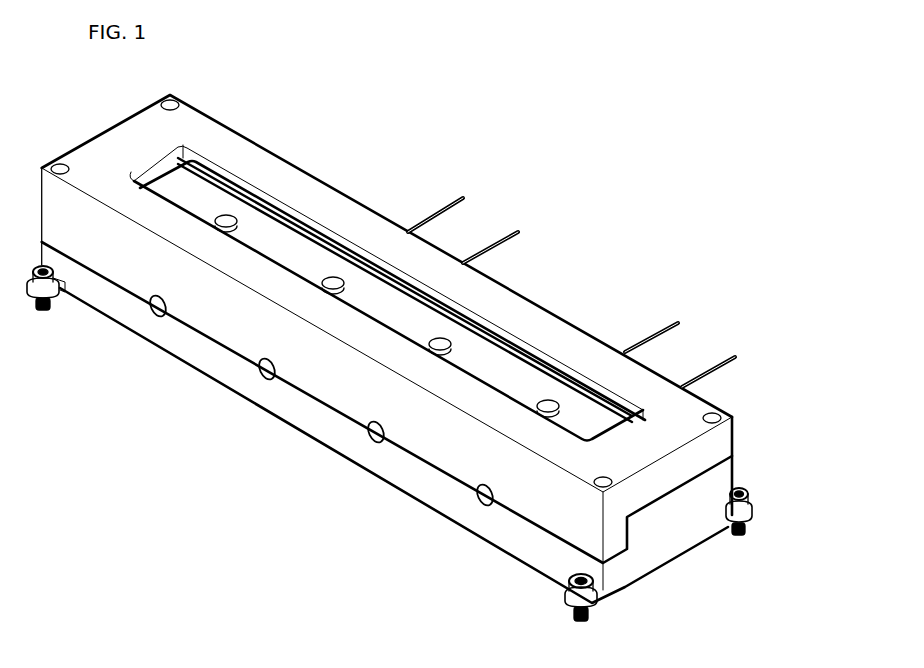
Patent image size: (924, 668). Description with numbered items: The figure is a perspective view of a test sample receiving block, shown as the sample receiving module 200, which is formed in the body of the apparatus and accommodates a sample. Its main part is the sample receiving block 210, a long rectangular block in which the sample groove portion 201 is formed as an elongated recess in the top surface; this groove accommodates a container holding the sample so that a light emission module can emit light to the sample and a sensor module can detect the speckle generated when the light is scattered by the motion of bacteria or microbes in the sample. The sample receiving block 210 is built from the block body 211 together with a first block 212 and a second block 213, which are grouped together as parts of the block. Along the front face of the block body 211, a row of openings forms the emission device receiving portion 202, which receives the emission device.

The sample receiving module 200 is at (645, 158).
The sample groove portion 201 is at (433, 357).
The emission device receiving portion 202 is at (380, 433).
The sample receiving block 210 is at (827, 375).
The block body 211 is at (588, 417).
The first block 212 is at (707, 498).
The second block 213 is at (707, 450).